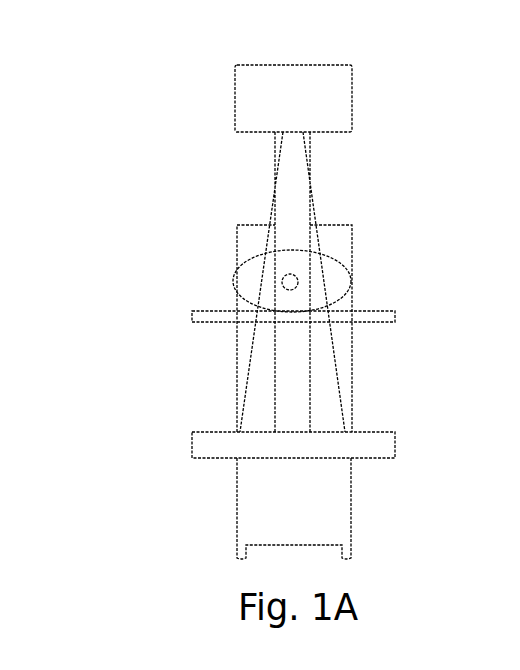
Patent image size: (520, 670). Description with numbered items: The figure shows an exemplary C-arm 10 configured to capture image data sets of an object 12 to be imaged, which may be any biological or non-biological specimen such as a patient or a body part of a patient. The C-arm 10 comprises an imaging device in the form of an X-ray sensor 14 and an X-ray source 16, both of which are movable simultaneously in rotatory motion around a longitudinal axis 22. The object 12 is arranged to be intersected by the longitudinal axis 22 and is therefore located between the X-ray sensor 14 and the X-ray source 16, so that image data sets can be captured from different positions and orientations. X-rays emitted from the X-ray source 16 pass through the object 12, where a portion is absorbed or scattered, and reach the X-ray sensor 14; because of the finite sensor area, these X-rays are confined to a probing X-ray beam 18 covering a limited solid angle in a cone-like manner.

The C-arm 10 is at (127, 117).
The object 12 is at (255, 288).
The X-ray sensor 14 is at (377, 448).
The X-ray source 16 is at (335, 100).
The probing X-ray beam 18 is at (317, 213).
The longitudinal axis 22 is at (298, 278).